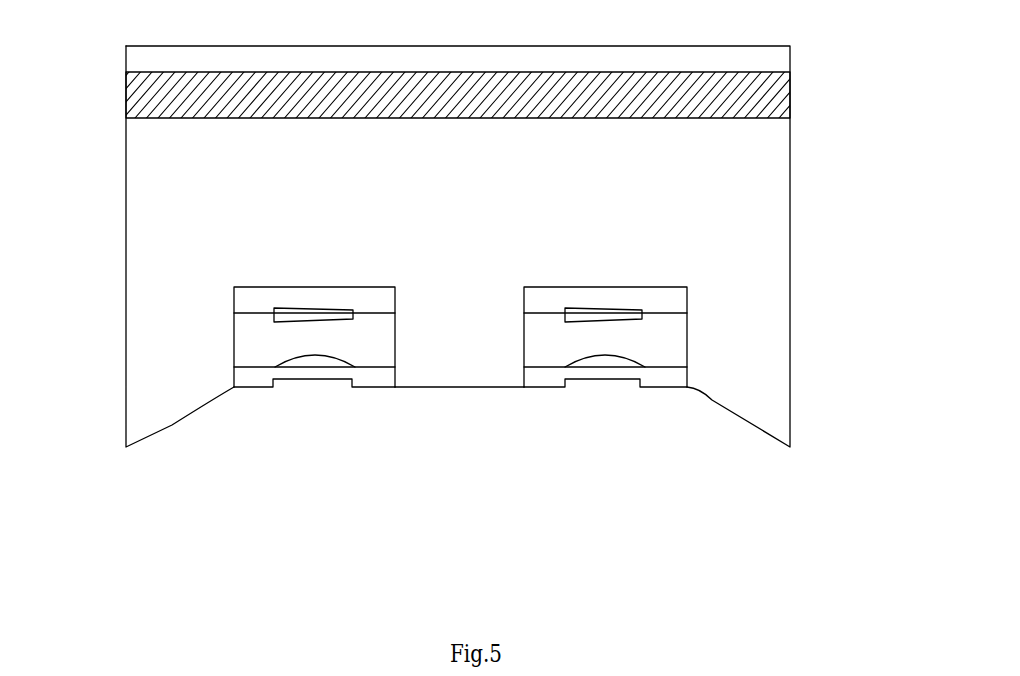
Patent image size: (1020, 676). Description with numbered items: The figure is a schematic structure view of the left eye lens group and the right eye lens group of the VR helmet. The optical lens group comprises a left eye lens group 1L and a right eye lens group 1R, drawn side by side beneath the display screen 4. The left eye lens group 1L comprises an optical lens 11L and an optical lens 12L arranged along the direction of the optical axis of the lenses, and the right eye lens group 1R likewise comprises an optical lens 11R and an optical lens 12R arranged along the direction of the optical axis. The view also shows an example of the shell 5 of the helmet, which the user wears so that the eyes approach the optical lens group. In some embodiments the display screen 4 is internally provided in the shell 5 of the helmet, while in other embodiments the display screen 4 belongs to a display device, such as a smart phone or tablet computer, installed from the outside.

The display screen 4 is at (160, 100).
The shell of the helmet 5 is at (790, 228).
The left eye lens group 1L is at (323, 441).
The optical lens 11L is at (281, 436).
The optical lens 12L is at (337, 315).
The right eye lens group 1R is at (633, 445).
The optical lens 11R is at (590, 439).
The optical lens 12R is at (625, 312).